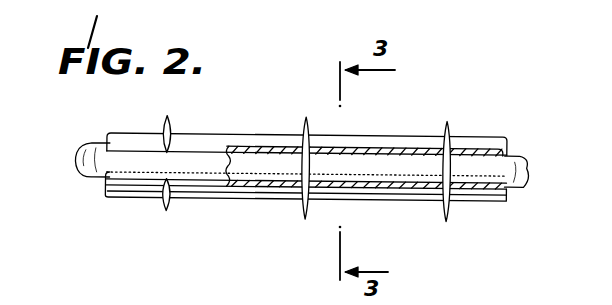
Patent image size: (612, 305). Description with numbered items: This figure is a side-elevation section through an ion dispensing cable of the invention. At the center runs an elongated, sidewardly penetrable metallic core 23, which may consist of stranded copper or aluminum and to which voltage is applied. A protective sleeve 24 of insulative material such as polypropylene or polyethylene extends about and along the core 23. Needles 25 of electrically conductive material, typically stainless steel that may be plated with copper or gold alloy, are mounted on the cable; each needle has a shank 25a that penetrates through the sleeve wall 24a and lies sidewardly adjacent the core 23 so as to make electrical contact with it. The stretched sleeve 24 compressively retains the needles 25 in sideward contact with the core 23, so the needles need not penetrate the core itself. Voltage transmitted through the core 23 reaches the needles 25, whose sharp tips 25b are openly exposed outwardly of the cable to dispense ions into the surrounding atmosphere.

The metallic core 23 is at (89, 146).
The protective sleeve 24 is at (486, 135).
The sleeve wall 24a is at (356, 184).
The needles 25 is at (304, 168).
The shanks 25a is at (162, 186).
The sharp tips 25b is at (306, 113).